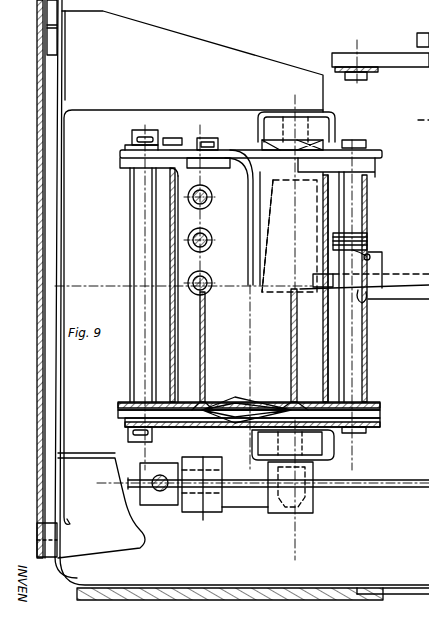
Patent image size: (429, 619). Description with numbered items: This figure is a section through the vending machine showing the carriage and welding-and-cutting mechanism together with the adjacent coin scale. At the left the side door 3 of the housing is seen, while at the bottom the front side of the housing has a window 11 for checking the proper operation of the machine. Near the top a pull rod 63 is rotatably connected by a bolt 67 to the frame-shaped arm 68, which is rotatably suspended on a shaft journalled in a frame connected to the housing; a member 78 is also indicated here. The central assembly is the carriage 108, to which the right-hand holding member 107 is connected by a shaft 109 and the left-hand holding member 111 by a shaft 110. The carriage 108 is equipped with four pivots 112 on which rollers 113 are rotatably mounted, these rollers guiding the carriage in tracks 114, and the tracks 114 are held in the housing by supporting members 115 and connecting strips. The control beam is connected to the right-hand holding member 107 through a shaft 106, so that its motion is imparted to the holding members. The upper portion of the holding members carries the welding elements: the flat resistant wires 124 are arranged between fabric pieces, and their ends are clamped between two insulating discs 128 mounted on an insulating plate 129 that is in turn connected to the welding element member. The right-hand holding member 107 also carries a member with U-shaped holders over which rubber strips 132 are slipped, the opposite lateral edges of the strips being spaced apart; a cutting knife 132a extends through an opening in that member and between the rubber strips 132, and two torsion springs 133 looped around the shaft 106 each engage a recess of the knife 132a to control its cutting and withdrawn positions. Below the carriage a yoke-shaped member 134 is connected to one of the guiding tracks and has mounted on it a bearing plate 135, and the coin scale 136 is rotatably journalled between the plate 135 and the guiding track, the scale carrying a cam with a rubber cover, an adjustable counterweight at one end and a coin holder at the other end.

The side door 3 is at (37, 263).
The window 11 is at (217, 594).
The pull rod 63 is at (378, 70).
The bolt 67 is at (362, 75).
The frame-shaped arm 68 is at (377, 53).
The member 78 is at (428, 77).
The shaft 106 is at (362, 205).
The right-hand holding member 107 is at (338, 190).
The carriage 108 is at (296, 342).
The shaft 109 is at (353, 350).
The shaft 110 is at (132, 380).
The left-hand holding member 111 is at (170, 310).
The pivot 112 is at (312, 148).
The roller 113 is at (322, 130).
The track 114 is at (287, 112).
The supporting member 115 is at (185, 52).
The flat resistant wire 124 is at (229, 150).
The insulating disc 128 is at (207, 140).
The insulating plate 129 is at (180, 143).
The rubber strip 132 is at (364, 276).
The cutting knife 132a is at (383, 256).
The torsion spring 133 is at (368, 232).
The yoke-shaped member 134 is at (313, 503).
The bearing plate 135 is at (222, 512).
The coin scale 136 is at (400, 482).